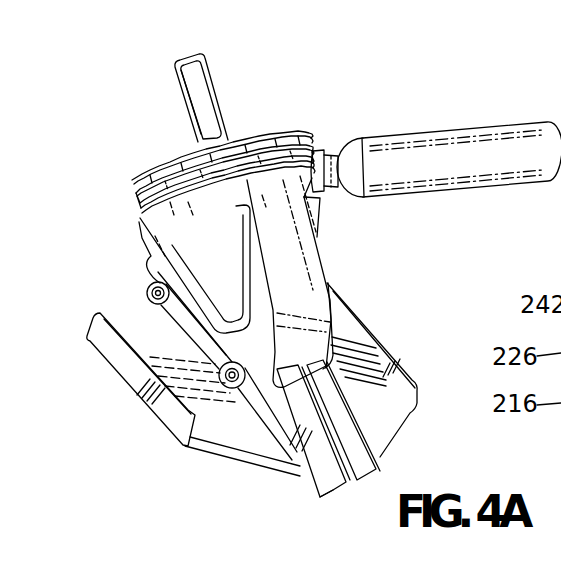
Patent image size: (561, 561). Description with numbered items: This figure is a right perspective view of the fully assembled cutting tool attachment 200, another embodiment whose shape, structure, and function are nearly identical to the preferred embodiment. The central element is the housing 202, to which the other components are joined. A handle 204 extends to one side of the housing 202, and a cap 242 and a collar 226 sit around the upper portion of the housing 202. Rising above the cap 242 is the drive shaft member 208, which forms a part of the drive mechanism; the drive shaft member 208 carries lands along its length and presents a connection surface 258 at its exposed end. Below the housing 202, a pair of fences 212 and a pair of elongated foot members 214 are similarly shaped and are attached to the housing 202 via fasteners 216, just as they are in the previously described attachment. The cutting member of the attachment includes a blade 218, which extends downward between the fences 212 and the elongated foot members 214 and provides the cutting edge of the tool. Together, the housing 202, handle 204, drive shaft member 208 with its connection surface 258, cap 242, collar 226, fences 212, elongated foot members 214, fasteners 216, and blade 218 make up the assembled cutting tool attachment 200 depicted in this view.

The cutting tool attachment 200 is at (337, 96).
The housing 202 is at (150, 270).
The handle 204 is at (428, 128).
The drive shaft member 208 is at (215, 88).
The fences 212 is at (128, 376).
The elongated foot members 214 is at (383, 452).
The fasteners 216 is at (148, 292).
The blade 218 is at (316, 489).
The collar 226 is at (133, 182).
The cap 242 is at (267, 128).
The connection surface 258 is at (199, 110).